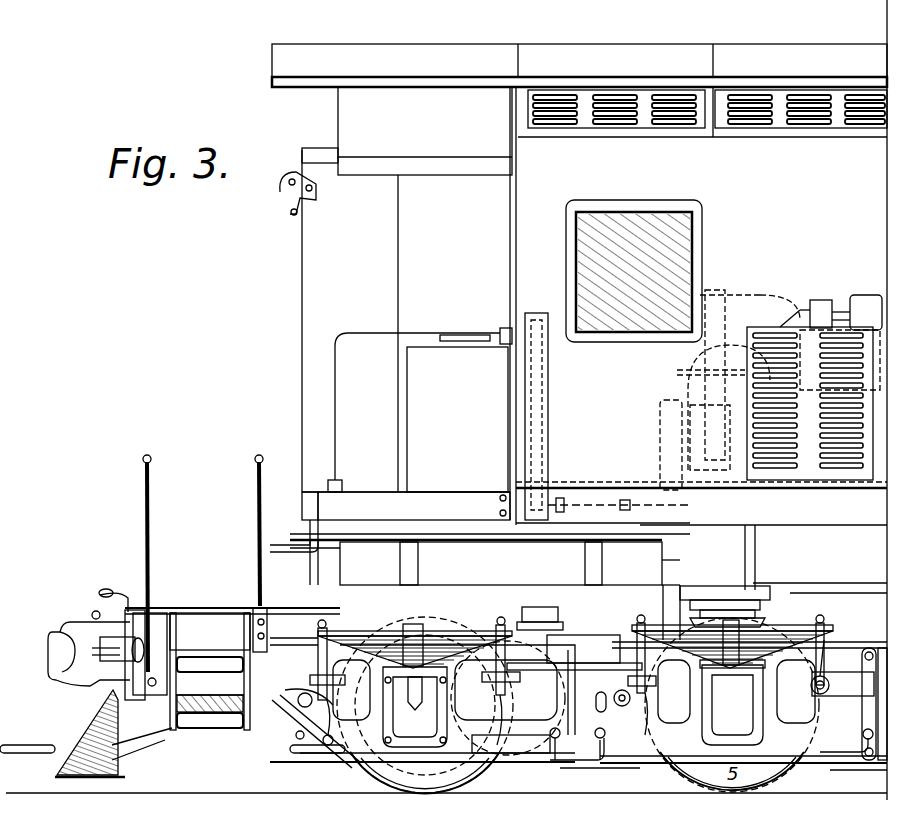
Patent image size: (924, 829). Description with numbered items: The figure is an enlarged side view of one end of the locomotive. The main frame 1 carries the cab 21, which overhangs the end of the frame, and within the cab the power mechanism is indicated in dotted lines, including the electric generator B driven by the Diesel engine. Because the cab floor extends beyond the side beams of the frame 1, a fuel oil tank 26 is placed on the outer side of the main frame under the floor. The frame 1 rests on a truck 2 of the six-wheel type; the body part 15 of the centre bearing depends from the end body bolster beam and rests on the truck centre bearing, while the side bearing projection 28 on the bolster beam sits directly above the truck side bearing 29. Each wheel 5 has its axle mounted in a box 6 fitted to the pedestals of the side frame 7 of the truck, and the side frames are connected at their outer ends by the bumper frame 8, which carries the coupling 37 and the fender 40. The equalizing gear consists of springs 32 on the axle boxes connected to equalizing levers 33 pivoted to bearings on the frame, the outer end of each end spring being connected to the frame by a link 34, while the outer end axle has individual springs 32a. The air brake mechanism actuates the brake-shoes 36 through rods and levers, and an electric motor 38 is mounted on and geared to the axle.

The frame 1 is at (701, 503).
The truck 2 is at (420, 610).
The wheel 5 is at (470, 765).
The box 6 is at (574, 703).
The side frame 7 is at (568, 635).
The bumper frame 8 is at (199, 669).
The body part of the centre bearing 15 is at (705, 595).
The cab 21 is at (702, 214).
The fuel oil tank 26 is at (510, 563).
The side bearing projection 28 is at (725, 598).
The truck side bearing 29 is at (690, 620).
The spring 32 is at (790, 630).
The individual spring 32a is at (462, 630).
The equalizing lever 33 is at (849, 700).
The link 34 is at (318, 652).
The brake-shoe 36 is at (333, 706).
The coupling 37 is at (70, 630).
The electric motor 38 is at (535, 766).
The fender 40 is at (90, 738).
The electric generator B is at (815, 320).